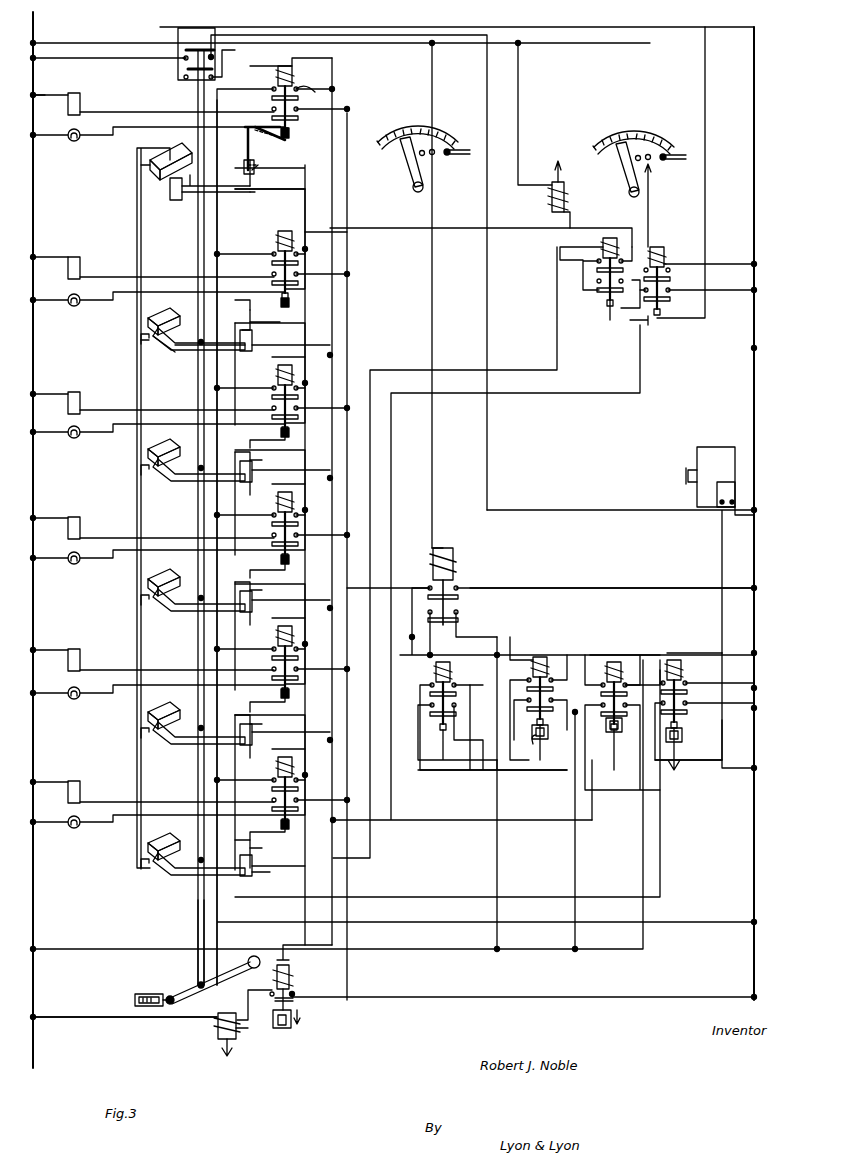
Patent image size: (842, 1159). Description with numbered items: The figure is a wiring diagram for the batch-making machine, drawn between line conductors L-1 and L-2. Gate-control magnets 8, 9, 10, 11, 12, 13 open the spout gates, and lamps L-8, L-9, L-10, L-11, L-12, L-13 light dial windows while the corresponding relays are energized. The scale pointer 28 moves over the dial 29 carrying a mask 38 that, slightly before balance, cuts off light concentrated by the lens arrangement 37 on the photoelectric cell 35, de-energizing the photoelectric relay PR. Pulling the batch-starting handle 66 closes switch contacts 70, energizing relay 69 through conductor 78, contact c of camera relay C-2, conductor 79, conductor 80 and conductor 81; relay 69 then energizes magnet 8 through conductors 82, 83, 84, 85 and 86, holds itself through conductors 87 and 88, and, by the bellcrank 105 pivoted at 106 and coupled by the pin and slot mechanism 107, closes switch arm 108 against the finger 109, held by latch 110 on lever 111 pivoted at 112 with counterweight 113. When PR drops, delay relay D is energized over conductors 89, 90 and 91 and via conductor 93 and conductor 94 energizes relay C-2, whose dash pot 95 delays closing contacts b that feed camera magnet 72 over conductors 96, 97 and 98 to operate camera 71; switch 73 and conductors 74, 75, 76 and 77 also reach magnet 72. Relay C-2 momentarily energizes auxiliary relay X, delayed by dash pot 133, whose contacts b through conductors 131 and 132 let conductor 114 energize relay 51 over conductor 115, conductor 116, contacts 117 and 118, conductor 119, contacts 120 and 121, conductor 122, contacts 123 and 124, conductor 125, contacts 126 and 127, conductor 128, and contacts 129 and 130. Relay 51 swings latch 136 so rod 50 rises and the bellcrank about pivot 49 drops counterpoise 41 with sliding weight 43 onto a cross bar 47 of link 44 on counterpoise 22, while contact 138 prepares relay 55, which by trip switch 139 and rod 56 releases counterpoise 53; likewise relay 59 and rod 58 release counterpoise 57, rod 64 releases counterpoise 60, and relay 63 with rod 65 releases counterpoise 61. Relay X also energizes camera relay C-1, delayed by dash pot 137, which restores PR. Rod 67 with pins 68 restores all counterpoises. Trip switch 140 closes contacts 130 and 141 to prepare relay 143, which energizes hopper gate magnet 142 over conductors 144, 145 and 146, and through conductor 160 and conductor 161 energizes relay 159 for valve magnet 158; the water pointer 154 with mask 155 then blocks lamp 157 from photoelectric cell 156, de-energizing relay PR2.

The line conductor L-1 is at (24, 548).
The line conductor L-2 is at (769, 513).
The gate-control magnet 8 is at (80, 97).
The gate magnet 9 is at (80, 262).
The gate magnet 10 is at (80, 396).
The gate-control magnet 11 is at (80, 520).
The gate-control magnet 12 is at (80, 652).
The gate magnet 13 is at (80, 784).
The lamp L-8 is at (159, 141).
The lamp L-9 is at (159, 306).
The lamp L-10 is at (159, 438).
The lamp L-11 is at (159, 564).
The lamp L-12 is at (159, 700).
The lamp L-13 is at (159, 829).
The counterpoise 22 is at (162, 152).
The pointer 28 is at (410, 162).
The dial 29 is at (445, 132).
The photoelectric cell 35 is at (433, 156).
The lens arrangement 37 is at (452, 154).
The mask 38 is at (420, 150).
The second counterpoise 41 is at (162, 322).
The sliding weight 43 is at (178, 356).
The link 44 is at (135, 452).
The cross bar 47 is at (136, 355).
The pivot 49 is at (163, 358).
The rod 50 is at (258, 345).
The relay 51 is at (276, 234).
The counterpoise 53 is at (162, 455).
The relay 55 is at (276, 370).
The rod 56 is at (186, 484).
The counterpoise 57 is at (162, 585).
The rod 58 is at (186, 614).
The relay 59 is at (276, 496).
The counterpoise 60 is at (162, 718).
The counterpoise 61 is at (276, 630).
The relay 63 is at (276, 762).
The rod 64 is at (186, 750).
The rod 65 is at (254, 870).
The batch-starting handle 66 is at (250, 958).
The batch-starting rod 67 is at (197, 930).
The pin 68 is at (200, 468).
The relay 69 is at (276, 70).
The switch contacts 70 is at (182, 70).
The camera 71 is at (710, 452).
The camera operating magnet 72 is at (732, 492).
The switch 73 is at (195, 45).
The conductor 74 is at (110, 55).
The conductor 75 is at (600, 510).
The conductor 76 is at (702, 507).
The conductor 77 is at (738, 516).
The conductor 78 is at (95, 952).
The conductor 79 is at (335, 316).
The conductor 80 is at (310, 68).
The conductor 81 is at (175, 30).
The conductor 82 is at (46, 97).
The conductor 83 is at (126, 111).
The conductor 84 is at (346, 112).
The conductor 85 is at (358, 586).
The conductor 86 is at (548, 588).
The conductor 87 is at (305, 93).
The conductor 88 is at (230, 100).
The conductor 89 is at (497, 620).
The conductor 90 is at (428, 638).
The conductor 91 is at (470, 685).
The conductor 93 is at (526, 652).
The conductor 94 is at (636, 680).
The dash pot 95 is at (616, 740).
The conductor 96 is at (586, 700).
The conductor 97 is at (630, 712).
The conductor 98 is at (690, 744).
The bellcrank 105 is at (268, 140).
The pivot 106 is at (245, 130).
The pin and slot mechanism 107 is at (290, 133).
The switch arm 108 is at (243, 150).
The stationary contact finger 109 is at (258, 166).
The latch 110 is at (250, 189).
The lever 111 is at (224, 190).
The pivot 112 is at (190, 196).
The counterweight 113 is at (170, 190).
The conductor 114 is at (310, 216).
The conductor 115 is at (298, 232).
The conductor 116 is at (230, 216).
The trip switch contact 117 is at (252, 304).
The trip switch contact 118 is at (258, 325).
The conductor 119 is at (236, 360).
The trip switch contact 120 is at (258, 480).
The trip switch contact 121 is at (260, 466).
The conductor 122 is at (235, 490).
The trip switch contact 123 is at (256, 566).
The latch 124 is at (258, 588).
The conductor 125 is at (230, 620).
The trip switch contact 126 is at (256, 698).
The latch 127 is at (258, 726).
The conductor 128 is at (230, 790).
The trip switch contact 129 is at (248, 838).
The latch 130 is at (252, 850).
The conductor 131 is at (246, 890).
The conductor 132 is at (742, 704).
The dash pot 133 is at (682, 736).
The latch 136 is at (282, 303).
The dash pot 137 is at (542, 744).
The trip switch contact 138 is at (265, 325).
The trip switch 139 is at (288, 437).
The trip switch 140 is at (288, 832).
The contact 141 is at (276, 873).
The hopper gate magnet 142 is at (226, 1012).
The hopper gate operating relay 143 is at (298, 974).
The conductor 144 is at (86, 1020).
The conductor 145 is at (244, 1032).
The conductor 146 is at (358, 996).
The pointer 154 is at (624, 172).
The mask 155 is at (634, 158).
The photoelectric cell 156 is at (652, 152).
The lamp 157 is at (670, 159).
The valve magnet 158 is at (550, 203).
The relay 159 is at (612, 236).
The conductor 160 is at (556, 296).
The conductor 161 is at (524, 228).
The photoelectric relay PR is at (452, 558).
The second photoelectric cell relay PR2 is at (666, 250).
The delay relay D is at (452, 668).
The camera-operating relay C-1 is at (546, 652).
The camera relay C-2 is at (618, 660).
The auxiliary relay X is at (682, 666).